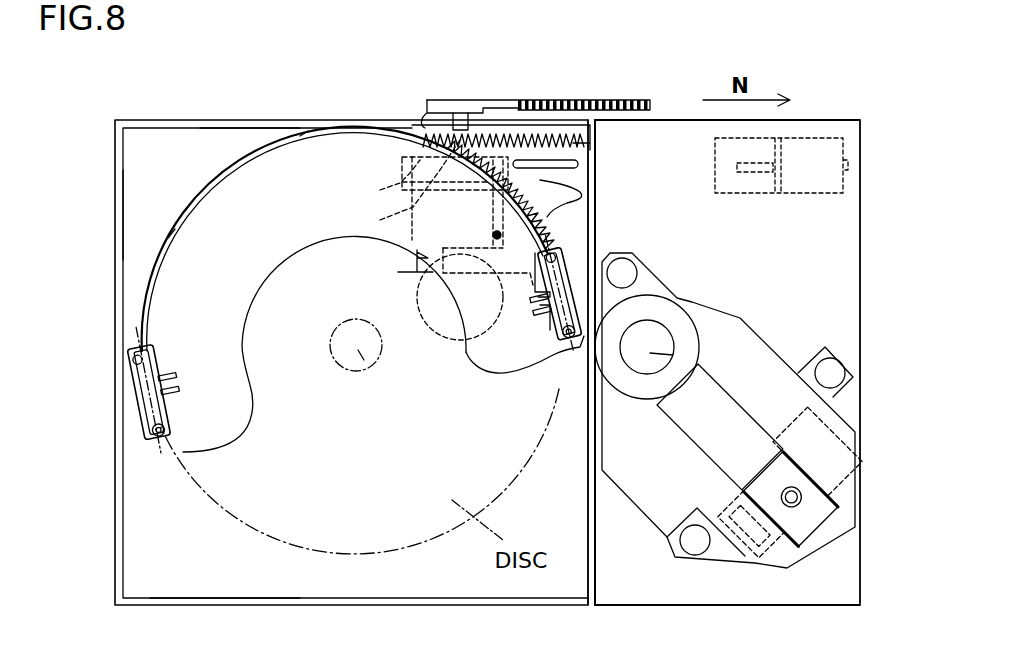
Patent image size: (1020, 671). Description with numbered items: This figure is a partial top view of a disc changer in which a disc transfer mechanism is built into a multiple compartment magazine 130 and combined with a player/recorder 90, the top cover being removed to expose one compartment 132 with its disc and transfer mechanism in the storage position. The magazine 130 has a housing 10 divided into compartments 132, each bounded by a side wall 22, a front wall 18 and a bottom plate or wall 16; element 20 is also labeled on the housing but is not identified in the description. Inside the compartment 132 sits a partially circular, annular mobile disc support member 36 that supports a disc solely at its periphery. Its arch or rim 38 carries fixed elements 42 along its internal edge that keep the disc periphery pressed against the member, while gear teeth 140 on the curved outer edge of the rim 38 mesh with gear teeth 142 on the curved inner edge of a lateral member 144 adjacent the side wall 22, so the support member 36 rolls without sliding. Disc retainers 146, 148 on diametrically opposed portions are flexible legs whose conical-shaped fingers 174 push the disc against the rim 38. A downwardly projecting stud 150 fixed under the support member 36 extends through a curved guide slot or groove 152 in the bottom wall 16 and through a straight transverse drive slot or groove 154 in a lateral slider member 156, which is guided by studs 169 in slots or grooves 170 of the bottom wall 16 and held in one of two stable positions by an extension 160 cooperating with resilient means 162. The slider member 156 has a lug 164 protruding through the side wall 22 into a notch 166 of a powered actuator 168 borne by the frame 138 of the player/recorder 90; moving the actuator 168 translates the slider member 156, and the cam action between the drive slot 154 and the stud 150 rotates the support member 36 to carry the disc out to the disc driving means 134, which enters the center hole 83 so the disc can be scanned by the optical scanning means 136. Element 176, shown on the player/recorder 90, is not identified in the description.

The housing 10 is at (143, 118).
The disc storage magazine 130 is at (197, 104).
The side wall 22 is at (257, 123).
The compartment 132 is at (143, 202).
The bottom wall 20 is at (118, 543).
The bottom plate or wall 16 is at (377, 583).
The front wall 18 is at (588, 540).
The frame 138 is at (877, 254).
The gear teeth 140 is at (597, 213).
The arch or rim 38 is at (227, 173).
The fixed elements 42 is at (307, 143).
The mobile disc support member 36 is at (220, 355).
The stud 150 is at (482, 371).
The center hole 83 is at (366, 367).
The disc retainer 146 is at (147, 393).
The disc retainer 148 is at (535, 362).
The conical-shaped fingers 174 is at (150, 440).
The gear teeth 142 is at (593, 152).
The lateral member 144 is at (520, 133).
The notch 166 is at (430, 108).
The lug 164 is at (462, 100).
The powered actuator 168 is at (623, 97).
The slots or grooves 170 is at (573, 125).
The studs 169 is at (487, 133).
The lateral slider member 156 is at (407, 205).
The transverse drive slot or groove 154 is at (400, 238).
The extension 160 is at (430, 290).
The resilient means 162 is at (448, 328).
The curved guide slot or groove 152 is at (585, 190).
The carriage frame 176 is at (725, 313).
The disc driving means 134 is at (665, 313).
The player/recorder 90 is at (772, 372).
The optical (laser) scanning means 136 is at (810, 518).